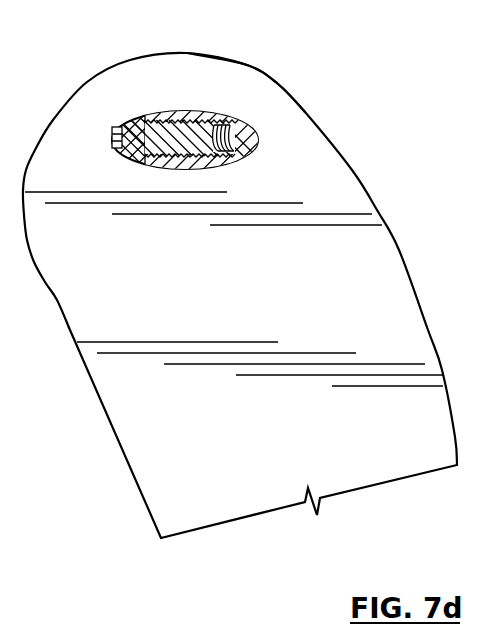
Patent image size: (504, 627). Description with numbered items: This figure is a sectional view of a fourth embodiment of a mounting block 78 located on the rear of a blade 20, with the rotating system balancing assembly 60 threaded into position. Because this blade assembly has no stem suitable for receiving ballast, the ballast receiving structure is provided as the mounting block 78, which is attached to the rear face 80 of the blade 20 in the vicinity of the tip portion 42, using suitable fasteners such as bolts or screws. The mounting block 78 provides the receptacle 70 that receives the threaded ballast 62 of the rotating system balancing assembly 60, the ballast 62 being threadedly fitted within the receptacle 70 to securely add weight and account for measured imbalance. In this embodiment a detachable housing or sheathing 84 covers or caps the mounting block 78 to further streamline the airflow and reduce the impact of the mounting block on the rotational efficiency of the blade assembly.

The blade 20 is at (385, 257).
The tip portion 42 is at (270, 100).
The rotating system balancing assembly 60 is at (192, 158).
The threaded ballast 62 is at (172, 136).
The receptacle 70 is at (222, 133).
The mounting block 78 is at (238, 155).
The rear face 80 is at (148, 301).
The detachable housing or sheathing 84 is at (130, 150).